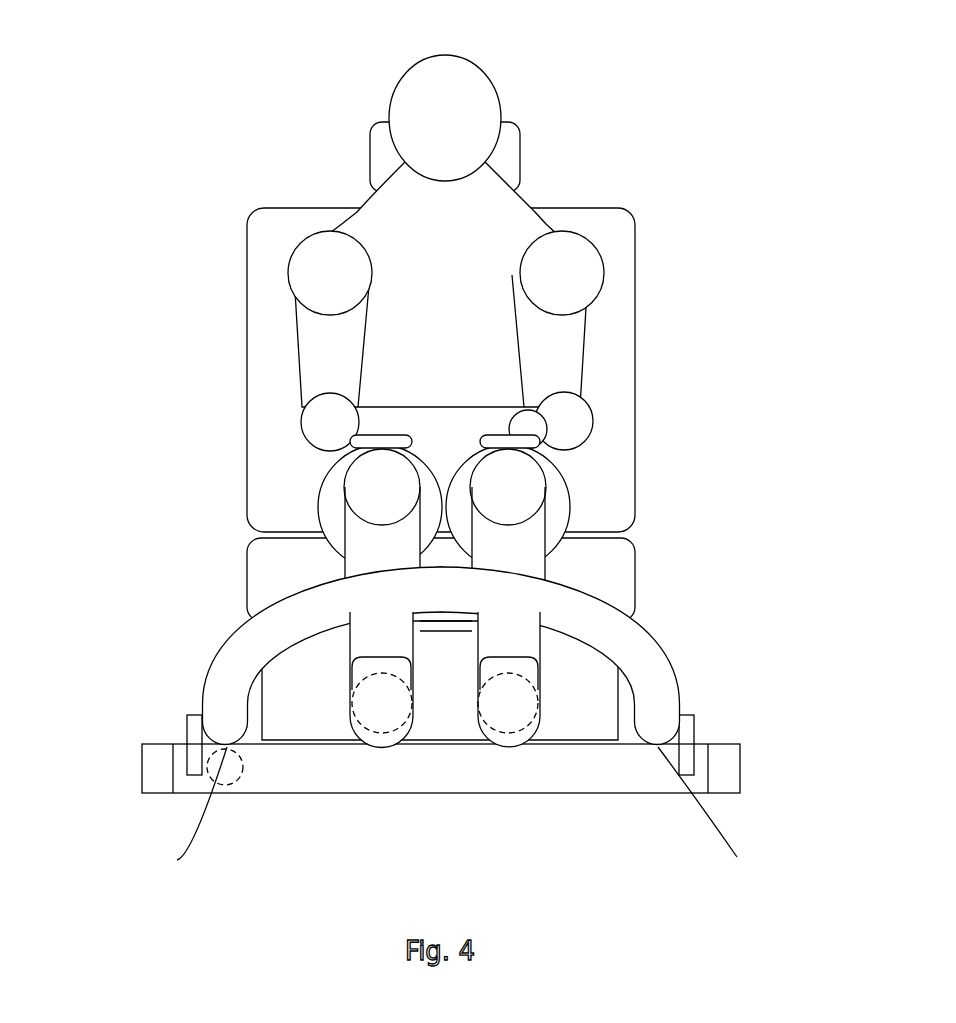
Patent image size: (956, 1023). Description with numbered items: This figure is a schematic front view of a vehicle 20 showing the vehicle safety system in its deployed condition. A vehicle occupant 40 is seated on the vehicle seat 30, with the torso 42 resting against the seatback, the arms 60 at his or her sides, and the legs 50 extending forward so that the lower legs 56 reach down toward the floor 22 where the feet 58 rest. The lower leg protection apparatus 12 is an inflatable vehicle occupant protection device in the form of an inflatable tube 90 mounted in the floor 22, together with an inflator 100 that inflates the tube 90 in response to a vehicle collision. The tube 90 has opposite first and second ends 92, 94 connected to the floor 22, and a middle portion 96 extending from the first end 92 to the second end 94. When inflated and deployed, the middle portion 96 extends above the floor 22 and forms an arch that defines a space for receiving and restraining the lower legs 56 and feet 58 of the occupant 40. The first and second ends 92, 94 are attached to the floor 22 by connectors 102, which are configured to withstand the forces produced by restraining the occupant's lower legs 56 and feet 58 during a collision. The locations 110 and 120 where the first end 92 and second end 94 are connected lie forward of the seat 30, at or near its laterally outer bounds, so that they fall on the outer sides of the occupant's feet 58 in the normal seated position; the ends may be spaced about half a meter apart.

The lower leg protection apparatus 12 is at (667, 627).
The vehicle 20 is at (198, 123).
The floor 22 is at (728, 780).
The vehicle seat 30 is at (273, 405).
The vehicle occupant 40 is at (430, 327).
The torso 42 is at (457, 325).
The legs 50 is at (327, 477).
The lower legs 56 is at (367, 552).
The feet 58 is at (390, 677).
The arms 60 is at (320, 345).
The inflatable tube 90 is at (431, 605).
The first end 92 is at (223, 705).
The second end 94 is at (662, 708).
The middle portion 96 is at (427, 593).
The inflator 100 is at (242, 782).
The connectors 102 is at (197, 742).
The location of first end connection 110 is at (178, 820).
The location of second end connection 120 is at (721, 813).